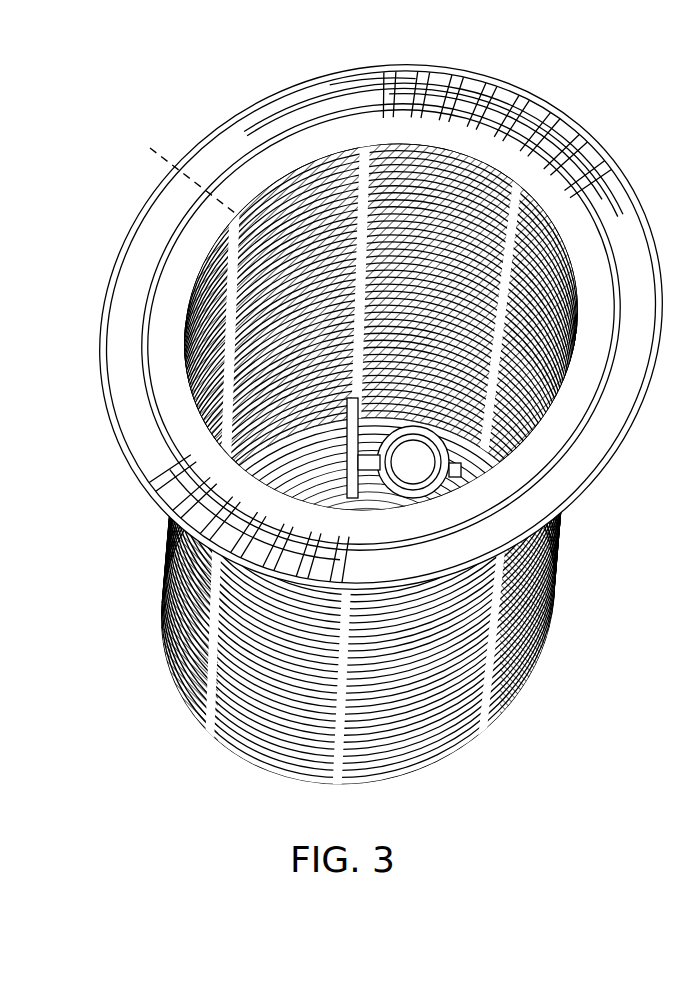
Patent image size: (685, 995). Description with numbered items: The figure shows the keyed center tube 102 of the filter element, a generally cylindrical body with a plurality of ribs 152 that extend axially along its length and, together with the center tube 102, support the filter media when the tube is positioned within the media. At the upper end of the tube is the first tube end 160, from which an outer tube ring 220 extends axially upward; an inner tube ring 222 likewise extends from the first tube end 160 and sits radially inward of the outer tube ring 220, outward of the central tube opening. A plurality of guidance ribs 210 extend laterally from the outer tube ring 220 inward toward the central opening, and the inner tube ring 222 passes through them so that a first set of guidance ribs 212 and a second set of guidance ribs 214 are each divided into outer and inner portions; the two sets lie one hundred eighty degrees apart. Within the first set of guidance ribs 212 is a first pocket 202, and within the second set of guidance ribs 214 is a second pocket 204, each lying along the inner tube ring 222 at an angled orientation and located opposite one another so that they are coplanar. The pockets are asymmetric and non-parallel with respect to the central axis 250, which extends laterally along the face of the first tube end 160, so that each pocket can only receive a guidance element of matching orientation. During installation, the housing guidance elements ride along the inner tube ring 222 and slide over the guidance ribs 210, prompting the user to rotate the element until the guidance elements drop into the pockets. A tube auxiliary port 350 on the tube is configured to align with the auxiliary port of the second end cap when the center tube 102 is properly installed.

The center tube 102 is at (185, 98).
The plurality of ribs 152 is at (557, 580).
The first tube end 160 is at (128, 320).
The first pocket 202 is at (522, 118).
The second pocket 204 is at (238, 522).
The plurality of guidance ribs 210 is at (458, 68).
The first set of guidance ribs 212 is at (478, 95).
The second set of guidance ribs 214 is at (175, 494).
The outer tube ring 220 is at (268, 117).
The inner tube ring 222 is at (348, 118).
The central axis 250 is at (552, 437).
The tube auxiliary port 350 is at (397, 456).